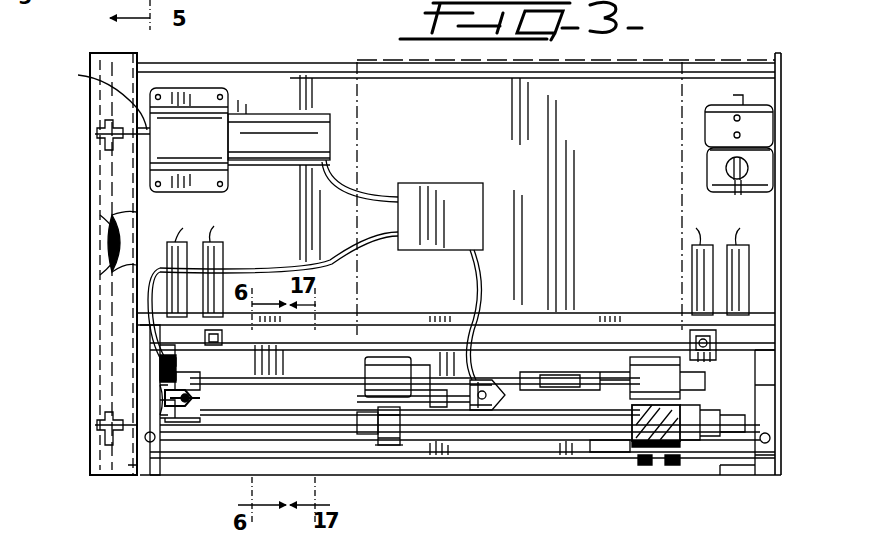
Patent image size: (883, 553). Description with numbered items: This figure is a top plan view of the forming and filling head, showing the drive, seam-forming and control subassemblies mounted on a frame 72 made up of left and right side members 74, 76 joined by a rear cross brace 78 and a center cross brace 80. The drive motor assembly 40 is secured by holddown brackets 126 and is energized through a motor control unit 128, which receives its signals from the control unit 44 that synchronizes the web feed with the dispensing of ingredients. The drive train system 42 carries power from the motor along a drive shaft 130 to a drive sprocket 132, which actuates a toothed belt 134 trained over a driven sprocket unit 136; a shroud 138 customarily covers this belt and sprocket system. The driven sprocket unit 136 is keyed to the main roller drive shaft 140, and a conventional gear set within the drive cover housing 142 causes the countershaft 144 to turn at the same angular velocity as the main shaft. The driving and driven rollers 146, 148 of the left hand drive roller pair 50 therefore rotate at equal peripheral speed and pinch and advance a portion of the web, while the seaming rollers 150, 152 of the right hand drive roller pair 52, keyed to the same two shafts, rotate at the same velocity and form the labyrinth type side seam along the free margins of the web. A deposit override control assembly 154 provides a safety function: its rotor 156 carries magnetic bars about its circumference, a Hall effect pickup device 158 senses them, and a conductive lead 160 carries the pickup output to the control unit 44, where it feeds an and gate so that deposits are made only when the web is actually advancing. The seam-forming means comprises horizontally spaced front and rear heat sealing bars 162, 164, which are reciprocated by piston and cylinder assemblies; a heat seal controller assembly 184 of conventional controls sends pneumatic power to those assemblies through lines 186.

The drive motor assembly 40 is at (240, 98).
The drive train system 42 is at (85, 204).
The control unit 44 is at (470, 182).
The left hand drive roller pair 50 is at (388, 454).
The right hand drive roller pair 52 is at (612, 452).
The frame 72 is at (732, 57).
The side member 74 is at (116, 255).
The side member 76 is at (782, 206).
The rear cross brace 78 is at (307, 71).
The center cross brace 80 is at (553, 322).
The holddown brackets 126 is at (225, 166).
The motor control unit 128 is at (279, 137).
The drive shaft 130 is at (90, 94).
The drive sprocket 132 is at (97, 134).
The toothed belt 134 is at (112, 242).
The driven sprocket unit 136 is at (95, 434).
The shroud 138 is at (90, 313).
The main roller drive shaft 140 is at (222, 432).
The drive cover housing 142 is at (146, 411).
The countershaft 144 is at (312, 380).
The driving roller 146 is at (390, 428).
The driven roller 148 is at (395, 360).
The seaming roller 150 is at (672, 442).
The seaming roller 152 is at (650, 357).
The deposit override control assembly 154 is at (146, 362).
The rotor 156 is at (194, 401).
The pickup device 158 is at (157, 307).
The conductive lead 160 is at (268, 264).
The front heat sealing bar 162 is at (475, 455).
The rear heat sealing bar 164 is at (505, 328).
The heat seal controller assembly 184 is at (702, 136).
The lines 186 is at (210, 240).